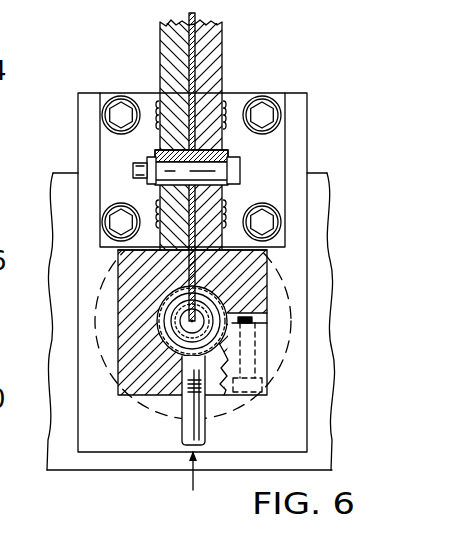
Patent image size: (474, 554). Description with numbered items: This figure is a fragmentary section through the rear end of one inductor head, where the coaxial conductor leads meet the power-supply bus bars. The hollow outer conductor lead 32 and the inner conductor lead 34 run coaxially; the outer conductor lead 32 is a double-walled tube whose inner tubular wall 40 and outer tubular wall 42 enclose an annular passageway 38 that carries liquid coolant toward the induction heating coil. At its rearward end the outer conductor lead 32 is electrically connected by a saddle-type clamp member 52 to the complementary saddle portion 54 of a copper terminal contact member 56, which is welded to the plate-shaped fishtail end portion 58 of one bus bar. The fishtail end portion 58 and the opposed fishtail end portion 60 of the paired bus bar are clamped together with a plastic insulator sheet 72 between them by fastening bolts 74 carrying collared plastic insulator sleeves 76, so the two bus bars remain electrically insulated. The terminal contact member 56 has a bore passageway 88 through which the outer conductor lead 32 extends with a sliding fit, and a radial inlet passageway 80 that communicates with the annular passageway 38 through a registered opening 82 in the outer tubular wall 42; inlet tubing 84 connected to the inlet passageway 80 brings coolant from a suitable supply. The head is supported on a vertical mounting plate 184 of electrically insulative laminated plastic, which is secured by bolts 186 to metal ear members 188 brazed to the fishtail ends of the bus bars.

The outer conductor lead 32 is at (160, 290).
The inner conductor lead 34 is at (178, 327).
The annular passageway 38 is at (197, 289).
The inner tubular wall 40 is at (213, 338).
The outer tubular wall 42 is at (160, 305).
The saddle-type clamp member 52 is at (258, 335).
The saddle portion 54 is at (258, 303).
The terminal contact member 56 is at (272, 260).
The fishtail end portion 58 is at (212, 63).
The fishtail end portion 60 is at (167, 52).
The plastic insulator sheet 72 is at (195, 34).
The fastening bolt 74 is at (165, 149).
The collared plastic insulator sleeve 76 is at (153, 184).
The radial inlet passageway 80 is at (200, 367).
The registered opening 82 is at (177, 365).
The inlet tubing 84 is at (203, 430).
The bore passageway 88 is at (170, 350).
The vertical mounting plate 184 is at (297, 155).
The bolt 186 is at (265, 110).
The metal ear member 188 is at (274, 142).